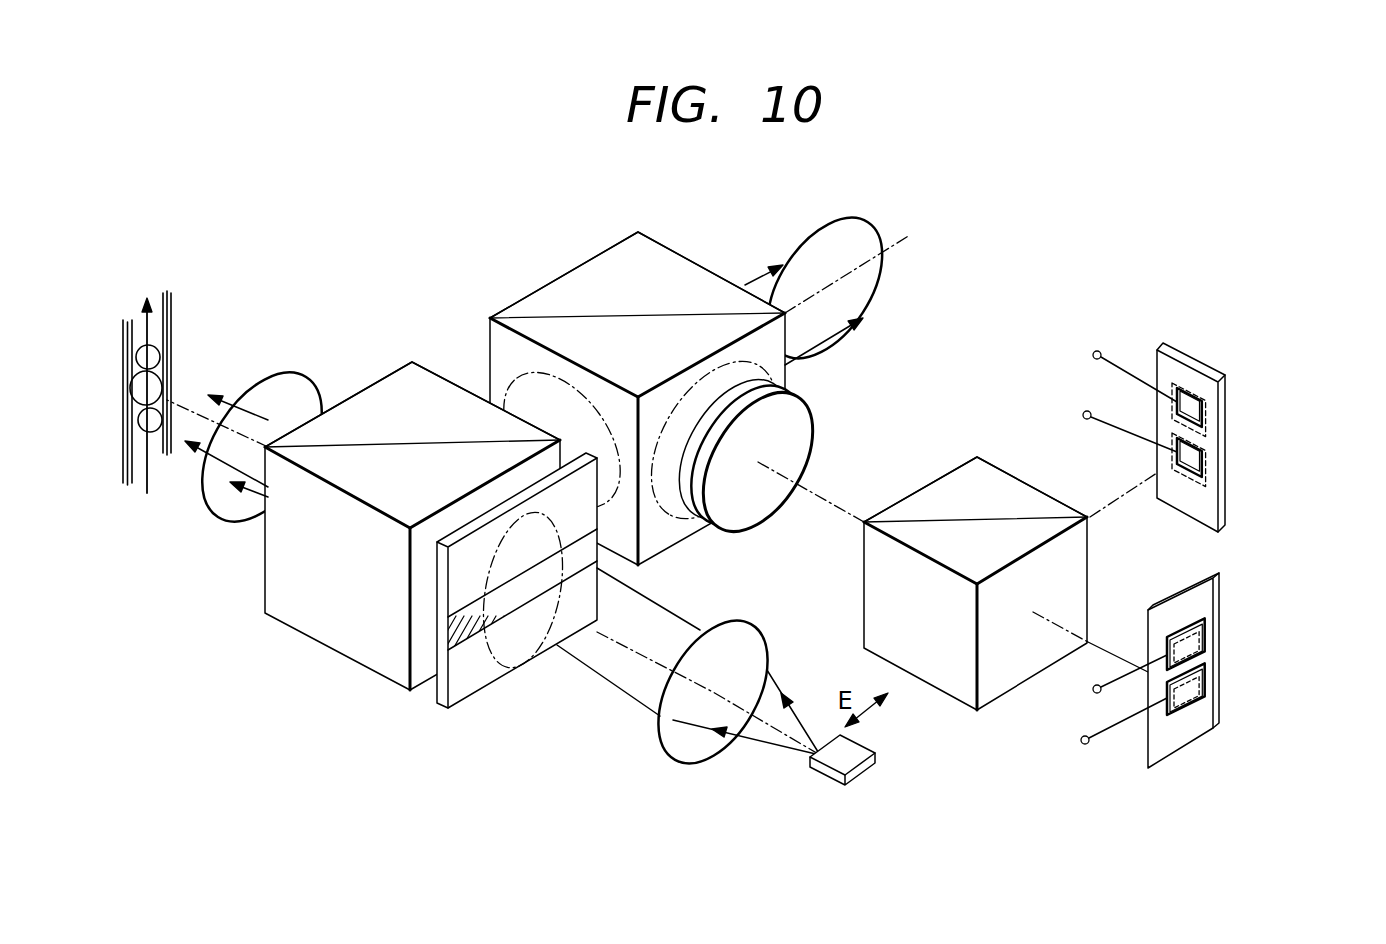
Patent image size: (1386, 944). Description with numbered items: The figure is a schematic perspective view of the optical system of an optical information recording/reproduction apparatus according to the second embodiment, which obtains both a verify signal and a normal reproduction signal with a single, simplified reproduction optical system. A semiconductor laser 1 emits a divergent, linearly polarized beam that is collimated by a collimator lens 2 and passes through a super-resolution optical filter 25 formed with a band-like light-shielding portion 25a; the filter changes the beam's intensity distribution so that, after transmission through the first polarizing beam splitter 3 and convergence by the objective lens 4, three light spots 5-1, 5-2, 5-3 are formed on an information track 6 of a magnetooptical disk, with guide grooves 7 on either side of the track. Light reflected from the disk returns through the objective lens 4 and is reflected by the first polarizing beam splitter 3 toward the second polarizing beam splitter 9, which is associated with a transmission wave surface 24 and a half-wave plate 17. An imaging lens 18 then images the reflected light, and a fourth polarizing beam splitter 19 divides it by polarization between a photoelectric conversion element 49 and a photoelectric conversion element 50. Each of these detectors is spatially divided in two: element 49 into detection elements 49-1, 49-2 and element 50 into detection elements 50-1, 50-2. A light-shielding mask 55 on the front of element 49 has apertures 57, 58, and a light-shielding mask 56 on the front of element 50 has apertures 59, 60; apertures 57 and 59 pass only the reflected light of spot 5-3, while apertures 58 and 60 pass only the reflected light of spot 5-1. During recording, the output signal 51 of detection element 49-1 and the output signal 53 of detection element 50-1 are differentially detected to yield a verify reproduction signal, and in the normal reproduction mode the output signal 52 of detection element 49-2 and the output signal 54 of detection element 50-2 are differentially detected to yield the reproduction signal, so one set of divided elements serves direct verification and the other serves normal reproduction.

The semiconductor laser 1 is at (818, 768).
The collimator lens 2 is at (668, 738).
The first polarizing beam splitter 3 is at (347, 642).
The objective lens 4 is at (227, 505).
The light spot 5-1 is at (155, 375).
The light spot 5-2 is at (157, 347).
The light spot 5-3 is at (145, 433).
The information track 6 is at (113, 282).
The grooves 7 is at (123, 330).
The second polarizing beam splitter 9 is at (550, 295).
The half-wave plate 17 is at (773, 383).
The imaging lens 18 is at (800, 433).
The fourth polarizing beam splitter 19 is at (965, 478).
The transmission wave surface 24 is at (783, 242).
The super-resolution optical filter 25 is at (487, 677).
The band-like light-shielding portion 25a is at (448, 628).
The photoelectric conversion element 49 is at (1249, 639).
The detection element 49-1 is at (1220, 605).
The detection element 49-2 is at (1236, 685).
The photoelectric conversion element 50 is at (1267, 413).
The detection element 50-1 is at (1243, 386).
The detection element 50-2 is at (1243, 433).
The output signal 51 is at (1093, 690).
The output signal 52 is at (1081, 741).
The output signal 53 is at (1095, 351).
The output signal 54 is at (1085, 411).
The light-shielding mask 55 is at (1157, 743).
The light-shielding mask 56 is at (1175, 362).
The aperture 57 is at (1190, 617).
The aperture 58 is at (1202, 703).
The aperture 59 is at (1192, 403).
The aperture 60 is at (1185, 452).